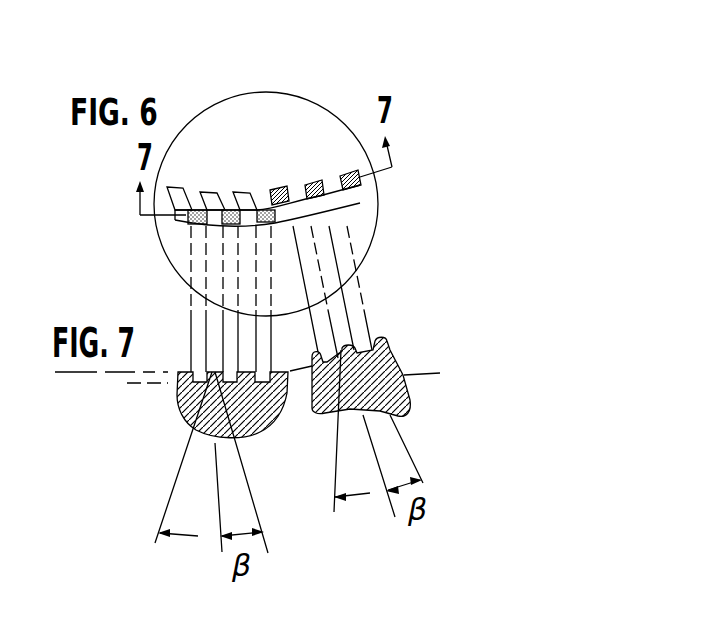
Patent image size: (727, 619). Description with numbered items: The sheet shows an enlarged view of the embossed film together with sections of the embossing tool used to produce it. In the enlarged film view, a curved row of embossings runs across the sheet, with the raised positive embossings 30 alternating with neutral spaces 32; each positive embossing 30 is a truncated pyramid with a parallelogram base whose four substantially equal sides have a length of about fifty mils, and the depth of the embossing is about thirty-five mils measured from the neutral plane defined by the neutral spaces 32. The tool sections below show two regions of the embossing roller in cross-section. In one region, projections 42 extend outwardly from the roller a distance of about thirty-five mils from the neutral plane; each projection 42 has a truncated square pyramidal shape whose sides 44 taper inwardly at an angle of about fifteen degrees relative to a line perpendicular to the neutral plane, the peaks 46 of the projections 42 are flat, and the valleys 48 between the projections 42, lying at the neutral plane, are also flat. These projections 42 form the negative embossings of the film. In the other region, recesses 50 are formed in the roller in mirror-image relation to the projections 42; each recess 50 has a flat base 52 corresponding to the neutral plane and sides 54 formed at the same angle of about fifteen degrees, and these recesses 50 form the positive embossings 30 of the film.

In FIG. 6, the positive embossings 30 is at (320, 185).
In FIG. 7, the positive embossings 30 is at (392, 336).
In FIG. 7, the neutral spaces 32 is at (390, 345).
In FIG. 7, the projections 42 is at (385, 337).
In FIG. 7, the sides 44 is at (373, 344).
In FIG. 7, the peaks 46 is at (355, 347).
In FIG. 7, the valleys 48 is at (440, 373).
In FIG. 7, the recesses 50 is at (192, 373).
In FIG. 7, the flat base 52 is at (217, 372).
In FIG. 7, the sides 54 is at (203, 373).